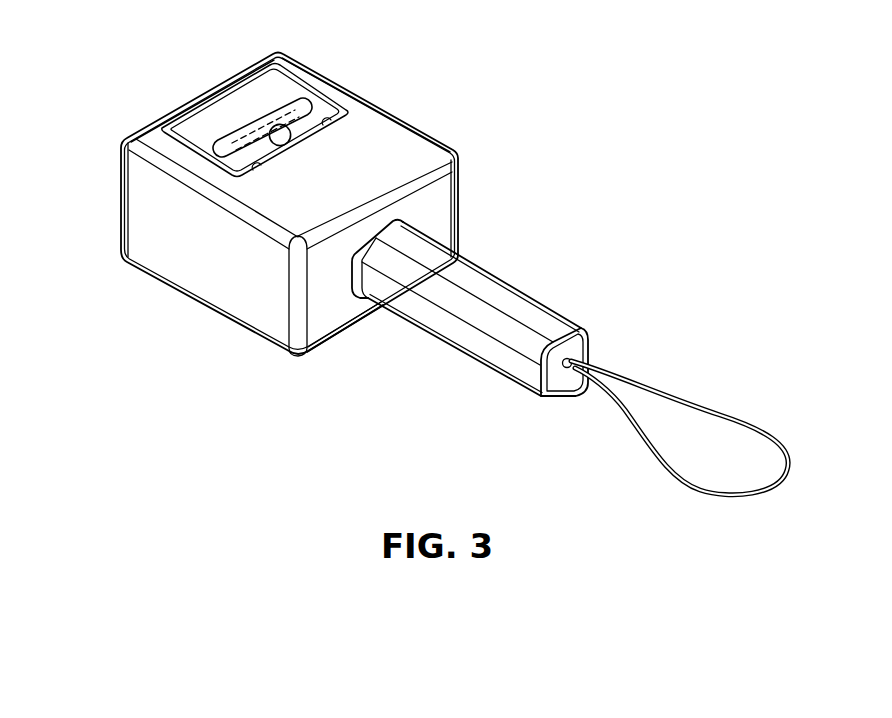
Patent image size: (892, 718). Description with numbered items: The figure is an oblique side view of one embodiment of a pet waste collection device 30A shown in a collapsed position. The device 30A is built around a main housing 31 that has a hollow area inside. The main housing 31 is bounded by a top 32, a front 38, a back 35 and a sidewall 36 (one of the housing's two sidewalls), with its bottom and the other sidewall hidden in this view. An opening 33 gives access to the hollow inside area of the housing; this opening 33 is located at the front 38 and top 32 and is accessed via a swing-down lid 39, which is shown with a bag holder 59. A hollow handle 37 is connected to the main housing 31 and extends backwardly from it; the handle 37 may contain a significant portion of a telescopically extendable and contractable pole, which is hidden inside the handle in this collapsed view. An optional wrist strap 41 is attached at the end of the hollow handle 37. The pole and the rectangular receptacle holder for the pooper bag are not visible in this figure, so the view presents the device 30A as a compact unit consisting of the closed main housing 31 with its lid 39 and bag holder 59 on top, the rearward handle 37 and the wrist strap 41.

The pet waste collection device 30A is at (430, 252).
The main housing 31 is at (291, 195).
The top 32 is at (297, 93).
The opening 33 is at (143, 138).
The back 35 is at (438, 211).
The sidewall 36 is at (250, 298).
The hollow handle 37 is at (517, 307).
The front 38 is at (120, 192).
The swing-down lid 39 is at (246, 93).
The wrist strap 41 is at (715, 415).
The bag holder 59 is at (257, 118).